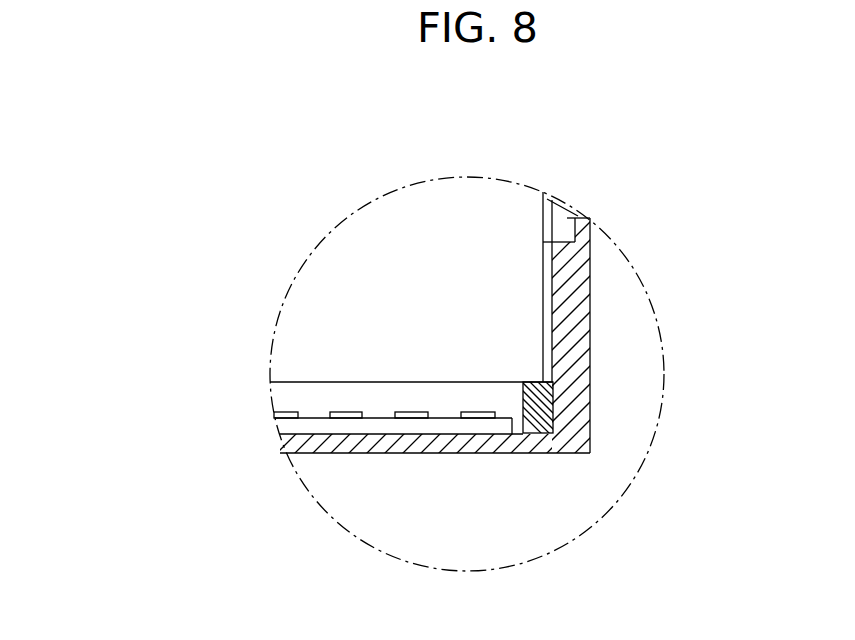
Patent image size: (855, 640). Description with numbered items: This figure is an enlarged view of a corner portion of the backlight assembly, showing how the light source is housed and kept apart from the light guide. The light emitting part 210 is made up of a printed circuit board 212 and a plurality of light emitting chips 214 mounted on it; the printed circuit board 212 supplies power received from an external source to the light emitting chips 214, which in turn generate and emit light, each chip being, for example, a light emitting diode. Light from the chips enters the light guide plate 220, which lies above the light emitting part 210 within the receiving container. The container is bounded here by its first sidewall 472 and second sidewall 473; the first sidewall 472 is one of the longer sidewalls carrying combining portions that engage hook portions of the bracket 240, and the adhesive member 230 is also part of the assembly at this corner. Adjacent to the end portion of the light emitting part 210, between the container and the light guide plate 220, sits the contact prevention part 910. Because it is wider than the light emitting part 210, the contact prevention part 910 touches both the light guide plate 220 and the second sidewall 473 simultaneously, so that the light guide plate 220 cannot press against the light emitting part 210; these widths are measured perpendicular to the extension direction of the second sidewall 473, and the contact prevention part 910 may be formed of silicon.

The light emitting part 210 is at (331, 414).
The printed circuit board 212 is at (283, 430).
The light emitting chips 214 is at (277, 413).
The light guide plate 220 is at (380, 252).
The adhesive member 230 is at (553, 195).
The bracket 240 is at (567, 222).
The first sidewall 472 is at (590, 318).
The second sidewall 473 is at (461, 453).
The contact prevention part 910 is at (548, 403).